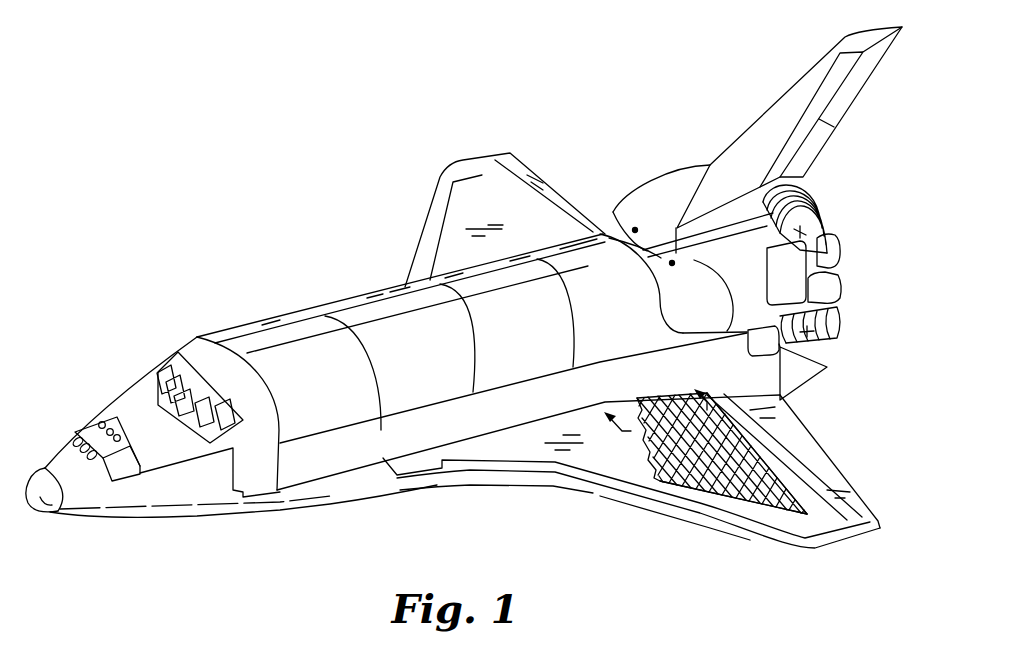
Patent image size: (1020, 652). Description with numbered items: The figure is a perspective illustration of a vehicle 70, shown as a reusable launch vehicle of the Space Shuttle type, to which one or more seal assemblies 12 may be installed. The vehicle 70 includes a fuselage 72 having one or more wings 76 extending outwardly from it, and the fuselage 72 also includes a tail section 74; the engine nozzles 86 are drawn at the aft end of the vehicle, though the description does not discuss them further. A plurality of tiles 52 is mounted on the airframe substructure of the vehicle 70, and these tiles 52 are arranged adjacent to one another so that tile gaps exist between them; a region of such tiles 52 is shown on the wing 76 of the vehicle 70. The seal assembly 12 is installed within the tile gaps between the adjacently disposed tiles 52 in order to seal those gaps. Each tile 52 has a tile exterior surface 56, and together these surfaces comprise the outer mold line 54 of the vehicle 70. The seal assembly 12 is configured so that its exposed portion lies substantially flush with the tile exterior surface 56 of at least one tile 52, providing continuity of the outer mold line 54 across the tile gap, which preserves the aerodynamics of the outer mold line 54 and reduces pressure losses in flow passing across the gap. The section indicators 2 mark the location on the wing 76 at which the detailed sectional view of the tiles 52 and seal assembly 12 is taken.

The vehicle 70 is at (304, 146).
The fuselage 72 is at (200, 342).
The tail section 74 is at (797, 83).
The wings 76 is at (458, 222).
The engine nozzle 86 is at (813, 200).
The tiles 52 is at (747, 470).
The seal assembly 12 is at (677, 483).
The outer mold line 54 is at (782, 507).
The tile exterior surface 56 is at (757, 453).
The section line for FIG. 2 is at (647, 394).